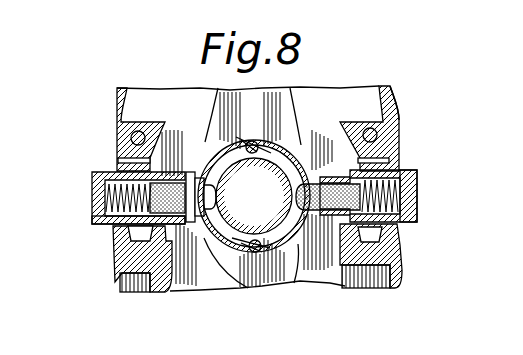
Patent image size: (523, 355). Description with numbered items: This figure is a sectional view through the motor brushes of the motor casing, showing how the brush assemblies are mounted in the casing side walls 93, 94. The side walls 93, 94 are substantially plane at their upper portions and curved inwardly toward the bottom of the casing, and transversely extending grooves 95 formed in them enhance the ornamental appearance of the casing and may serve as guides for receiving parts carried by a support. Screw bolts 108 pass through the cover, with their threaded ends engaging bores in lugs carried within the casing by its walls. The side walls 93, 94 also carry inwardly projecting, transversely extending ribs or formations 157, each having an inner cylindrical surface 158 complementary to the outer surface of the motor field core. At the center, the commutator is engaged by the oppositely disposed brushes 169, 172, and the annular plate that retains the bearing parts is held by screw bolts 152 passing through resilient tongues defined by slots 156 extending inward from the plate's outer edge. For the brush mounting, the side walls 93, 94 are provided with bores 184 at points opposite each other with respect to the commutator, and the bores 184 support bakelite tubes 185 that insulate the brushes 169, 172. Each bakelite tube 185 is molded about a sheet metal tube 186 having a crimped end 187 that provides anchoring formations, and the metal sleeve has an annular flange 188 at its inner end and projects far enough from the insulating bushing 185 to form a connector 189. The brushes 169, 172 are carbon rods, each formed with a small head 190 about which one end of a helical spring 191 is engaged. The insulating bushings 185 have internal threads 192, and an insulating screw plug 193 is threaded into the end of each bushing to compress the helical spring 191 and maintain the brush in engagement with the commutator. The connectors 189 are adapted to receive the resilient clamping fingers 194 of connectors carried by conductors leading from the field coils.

The side wall 93 is at (397, 112).
The side wall 94 is at (116, 135).
The transversely extending grooves 95 is at (391, 98).
The screw bolts 108 is at (248, 114).
The screw bolts 152 is at (246, 290).
The slots 156 is at (268, 290).
The ribs or formations 157 is at (140, 132).
The inner cylindrical surface 158 is at (172, 128).
The brush 169 is at (304, 170).
The brush 172 is at (190, 168).
The bores 184 is at (116, 165).
The bakelite tubes 185 is at (259, 277).
The sheet metal tube 186 is at (125, 292).
The crimped end 187 is at (416, 206).
The annular flanges 188 is at (303, 280).
The connector 189 is at (306, 180).
The head 190 is at (122, 228).
The helical spring 191 is at (100, 218).
The internal threads 192 is at (245, 211).
The insulating screw plug 193 is at (428, 183).
The resilient clamping fingers 194 is at (198, 218).